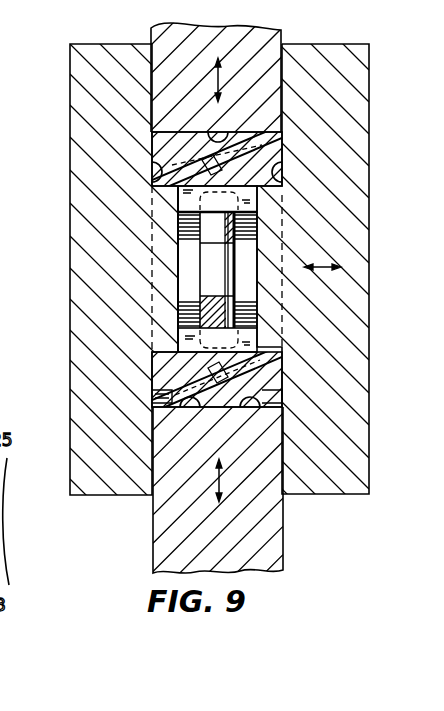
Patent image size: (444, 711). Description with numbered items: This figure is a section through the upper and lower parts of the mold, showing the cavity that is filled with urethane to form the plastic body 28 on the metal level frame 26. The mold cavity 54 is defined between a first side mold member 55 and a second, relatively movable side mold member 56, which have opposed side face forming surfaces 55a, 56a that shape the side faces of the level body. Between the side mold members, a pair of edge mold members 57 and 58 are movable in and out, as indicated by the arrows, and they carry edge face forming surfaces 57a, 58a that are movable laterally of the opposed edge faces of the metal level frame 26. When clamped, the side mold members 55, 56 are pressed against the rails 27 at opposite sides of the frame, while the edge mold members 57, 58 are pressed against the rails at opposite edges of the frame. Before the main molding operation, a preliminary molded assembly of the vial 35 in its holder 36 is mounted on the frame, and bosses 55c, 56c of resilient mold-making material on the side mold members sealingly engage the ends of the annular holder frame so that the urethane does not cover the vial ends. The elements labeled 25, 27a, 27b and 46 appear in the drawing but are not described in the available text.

The lower retainer plate 25 is at (272, 368).
The metal level frame 26 is at (4, 514).
The rails 27 is at (262, 403).
The pin end bracket 27a is at (155, 393).
The pin seat 27b is at (153, 417).
The plastic body 28 is at (245, 420).
The vial 35 is at (228, 272).
The holder 36 is at (270, 180).
The valve bottom plate 46 is at (252, 338).
The mold cavity 54 is at (262, 158).
The first side mold member 55 is at (78, 296).
The side face forming surface 55a is at (152, 187).
The boss 55c is at (166, 249).
The second side mold member 56 is at (357, 284).
The side face forming surface 56a is at (252, 168).
The boss 56c is at (270, 222).
The edge mold member 57 is at (236, 37).
The edge face forming surface 57a is at (222, 148).
The edge mold member 58 is at (272, 528).
The edge face forming surface 58a is at (201, 407).